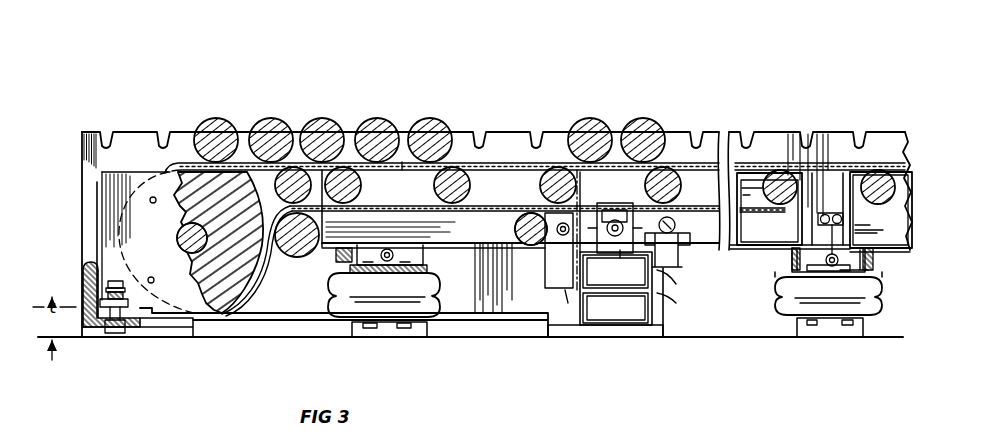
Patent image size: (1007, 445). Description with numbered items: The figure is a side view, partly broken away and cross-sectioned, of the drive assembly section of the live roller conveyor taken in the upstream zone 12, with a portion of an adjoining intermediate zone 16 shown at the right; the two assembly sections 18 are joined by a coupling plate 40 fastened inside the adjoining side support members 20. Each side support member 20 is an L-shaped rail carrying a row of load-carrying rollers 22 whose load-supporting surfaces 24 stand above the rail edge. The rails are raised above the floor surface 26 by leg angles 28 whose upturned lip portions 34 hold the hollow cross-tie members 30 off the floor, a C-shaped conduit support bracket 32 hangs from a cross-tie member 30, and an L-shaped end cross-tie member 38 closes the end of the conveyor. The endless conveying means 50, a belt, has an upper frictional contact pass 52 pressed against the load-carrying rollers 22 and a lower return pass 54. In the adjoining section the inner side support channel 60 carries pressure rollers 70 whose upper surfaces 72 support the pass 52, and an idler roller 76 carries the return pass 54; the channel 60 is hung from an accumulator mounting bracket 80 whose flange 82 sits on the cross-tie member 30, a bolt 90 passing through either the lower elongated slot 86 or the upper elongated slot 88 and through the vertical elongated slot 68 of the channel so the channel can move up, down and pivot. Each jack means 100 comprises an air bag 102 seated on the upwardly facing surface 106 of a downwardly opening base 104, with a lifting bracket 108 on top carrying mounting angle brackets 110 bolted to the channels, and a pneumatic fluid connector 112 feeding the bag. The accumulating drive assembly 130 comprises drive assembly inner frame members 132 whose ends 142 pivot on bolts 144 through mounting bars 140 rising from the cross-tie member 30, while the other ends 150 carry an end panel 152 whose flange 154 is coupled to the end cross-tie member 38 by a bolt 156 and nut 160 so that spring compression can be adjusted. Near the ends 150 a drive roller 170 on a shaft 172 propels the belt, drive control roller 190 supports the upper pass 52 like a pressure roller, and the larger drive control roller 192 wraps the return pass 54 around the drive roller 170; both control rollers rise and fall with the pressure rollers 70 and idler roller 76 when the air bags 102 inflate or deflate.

The upstream zone 12 is at (643, 86).
The intermediate zone 16 is at (885, 110).
The assembly section 18 is at (554, 130).
The side support member 20 is at (92, 132).
The load-carrying roller 22 is at (289, 184).
The load-supporting surface 24 is at (231, 123).
The floor surface 26 is at (508, 330).
The leg angle 28 is at (178, 337).
The cross-tie member 30 is at (676, 303).
The conduit support bracket 32 is at (676, 284).
The lip portion 34 is at (160, 332).
The end cross-tie member 38 is at (84, 270).
The coupling plate 40 is at (835, 213).
The endless conveying means 50 is at (182, 160).
The upper frictional contact pass 52 is at (402, 162).
The lower return pass 54 is at (512, 211).
The inner side support channel 60 is at (499, 185).
The elongated slot 68 is at (650, 218).
The pressure roller 70 is at (781, 178).
The upper surface 72 is at (456, 178).
The idler roller 76 is at (532, 244).
The accumulator mounting bracket 80 is at (602, 210).
The flange 82 is at (616, 265).
The lower elongated slot 86 is at (618, 240).
The upper elongated slot 88 is at (615, 218).
The bolt 90 is at (615, 308).
The jack means 100 is at (446, 290).
The air bag 102 is at (337, 292).
The base 104 is at (355, 325).
The upwardly facing surface 106 is at (385, 318).
The lifting bracket 108 is at (413, 273).
The mounting angle bracket 110 is at (345, 257).
The pneumatic fluid connector 112 is at (394, 254).
The accumulating drive assembly 130 is at (234, 350).
The drive assembly inner frame member 132 is at (95, 175).
The mounting bar 140 is at (560, 290).
The end 142 is at (568, 303).
The bolt 144 is at (560, 237).
The other end 150 is at (122, 173).
The end panel 152 is at (97, 203).
The flange 154 is at (108, 305).
The bolt 156 is at (110, 278).
The nut 160 is at (118, 334).
The drive roller 170 is at (192, 182).
The shaft 172 is at (178, 238).
The drive control roller 190 is at (268, 172).
The drive control roller 192 is at (301, 258).